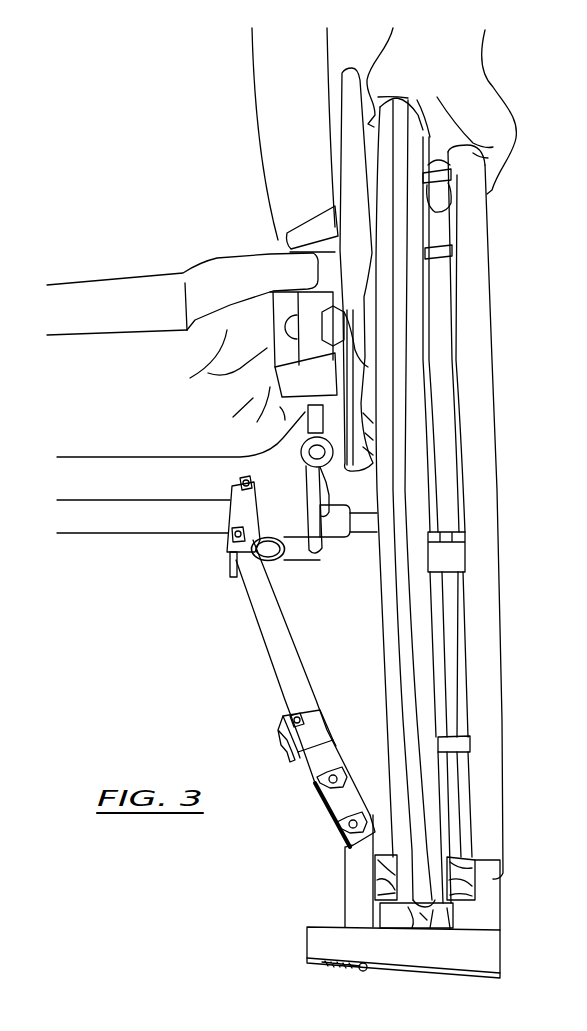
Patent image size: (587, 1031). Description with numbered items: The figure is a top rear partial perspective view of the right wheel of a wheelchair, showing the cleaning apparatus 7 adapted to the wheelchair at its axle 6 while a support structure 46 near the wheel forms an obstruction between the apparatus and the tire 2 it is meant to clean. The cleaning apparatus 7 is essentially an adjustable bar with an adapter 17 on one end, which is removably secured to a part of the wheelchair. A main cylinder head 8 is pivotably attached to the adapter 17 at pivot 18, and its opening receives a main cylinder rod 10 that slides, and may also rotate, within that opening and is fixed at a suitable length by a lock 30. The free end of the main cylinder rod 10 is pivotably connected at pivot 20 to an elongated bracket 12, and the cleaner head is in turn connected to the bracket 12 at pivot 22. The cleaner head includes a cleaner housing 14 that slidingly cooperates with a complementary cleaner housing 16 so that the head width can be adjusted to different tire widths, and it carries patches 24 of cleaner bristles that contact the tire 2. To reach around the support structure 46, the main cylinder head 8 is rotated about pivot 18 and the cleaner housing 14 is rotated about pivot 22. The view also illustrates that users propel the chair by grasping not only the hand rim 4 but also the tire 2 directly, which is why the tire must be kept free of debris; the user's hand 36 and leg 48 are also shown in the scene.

The tire 2 is at (382, 667).
The hand rim 4 is at (496, 382).
The axle 6 is at (121, 503).
The cleaning apparatus 7 is at (222, 607).
The main cylinder head 8 is at (270, 643).
The main cylinder rod 10 is at (327, 742).
The elongated bracket 12 is at (322, 800).
The cleaner housing 14 is at (346, 847).
The complementary cleaner housing 16 is at (423, 973).
The adapter 17 is at (232, 490).
The pivot 18 is at (226, 548).
The pivot 20 is at (316, 778).
The pivot 22 is at (333, 822).
The patches of cleaner bristles 24 is at (377, 873).
The lock 30 is at (283, 720).
The user's hand 36 is at (498, 104).
The support structure 46 is at (287, 545).
The user's leg 48 is at (172, 179).